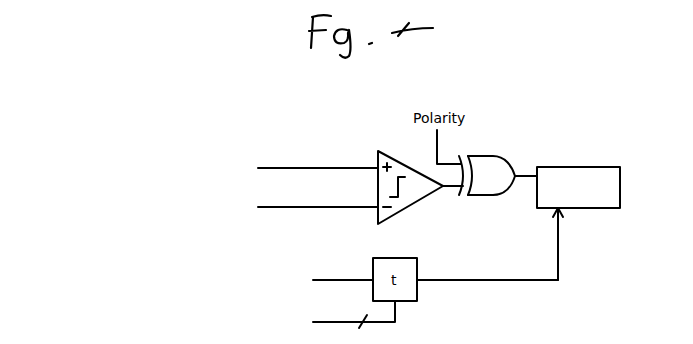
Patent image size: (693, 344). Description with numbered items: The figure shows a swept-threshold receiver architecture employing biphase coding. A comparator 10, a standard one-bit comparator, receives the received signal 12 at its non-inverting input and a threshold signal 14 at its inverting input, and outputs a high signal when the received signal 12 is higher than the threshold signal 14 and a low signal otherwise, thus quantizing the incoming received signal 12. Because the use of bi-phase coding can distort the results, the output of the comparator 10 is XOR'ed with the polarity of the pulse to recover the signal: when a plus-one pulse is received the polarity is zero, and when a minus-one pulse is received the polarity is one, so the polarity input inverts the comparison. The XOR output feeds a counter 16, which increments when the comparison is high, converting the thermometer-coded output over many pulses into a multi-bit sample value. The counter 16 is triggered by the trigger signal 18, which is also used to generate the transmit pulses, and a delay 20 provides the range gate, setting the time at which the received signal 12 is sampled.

The comparator 10 is at (400, 163).
The received (RX) signal 12 is at (188, 150).
The threshold signal 14 is at (190, 199).
The counter 16 is at (583, 167).
The trigger signal 18 is at (273, 267).
The delay 20 is at (278, 313).